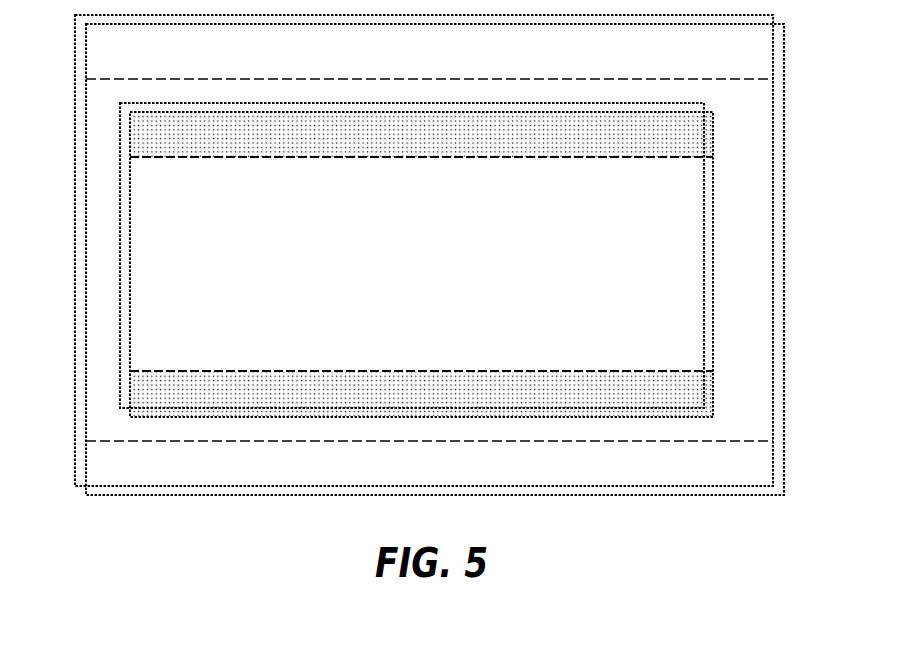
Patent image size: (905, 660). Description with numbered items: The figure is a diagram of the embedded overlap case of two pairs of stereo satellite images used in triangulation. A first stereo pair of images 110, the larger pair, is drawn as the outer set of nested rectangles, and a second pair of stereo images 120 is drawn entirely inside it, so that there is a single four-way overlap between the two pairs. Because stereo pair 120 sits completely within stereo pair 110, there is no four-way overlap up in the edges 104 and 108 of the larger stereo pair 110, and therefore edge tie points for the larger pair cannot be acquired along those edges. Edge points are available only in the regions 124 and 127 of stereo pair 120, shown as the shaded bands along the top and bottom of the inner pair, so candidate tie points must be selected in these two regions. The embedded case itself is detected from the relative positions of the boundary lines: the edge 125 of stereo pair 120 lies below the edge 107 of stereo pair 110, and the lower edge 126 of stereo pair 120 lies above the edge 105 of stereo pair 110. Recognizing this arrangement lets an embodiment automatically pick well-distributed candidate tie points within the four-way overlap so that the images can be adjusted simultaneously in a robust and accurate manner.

The edge of the larger stereo pair 104 is at (750, 465).
The edge of stereo pair 110 105 is at (428, 441).
The edge of stereo pair 110 107 is at (430, 79).
The edge of the larger stereo pair 108 is at (108, 52).
The first stereo pair of images 110 is at (752, 253).
The second pair of stereo images 120 is at (493, 265).
The region of stereo pair 120 124 is at (160, 118).
The edge of stereo pair 120 125 is at (416, 157).
The lower edge of stereo pair 120 126 is at (415, 371).
The region of stereo pair 120 127 is at (677, 398).